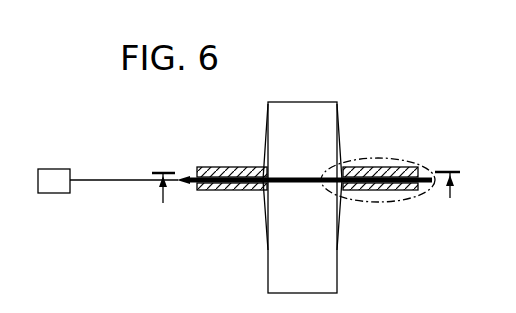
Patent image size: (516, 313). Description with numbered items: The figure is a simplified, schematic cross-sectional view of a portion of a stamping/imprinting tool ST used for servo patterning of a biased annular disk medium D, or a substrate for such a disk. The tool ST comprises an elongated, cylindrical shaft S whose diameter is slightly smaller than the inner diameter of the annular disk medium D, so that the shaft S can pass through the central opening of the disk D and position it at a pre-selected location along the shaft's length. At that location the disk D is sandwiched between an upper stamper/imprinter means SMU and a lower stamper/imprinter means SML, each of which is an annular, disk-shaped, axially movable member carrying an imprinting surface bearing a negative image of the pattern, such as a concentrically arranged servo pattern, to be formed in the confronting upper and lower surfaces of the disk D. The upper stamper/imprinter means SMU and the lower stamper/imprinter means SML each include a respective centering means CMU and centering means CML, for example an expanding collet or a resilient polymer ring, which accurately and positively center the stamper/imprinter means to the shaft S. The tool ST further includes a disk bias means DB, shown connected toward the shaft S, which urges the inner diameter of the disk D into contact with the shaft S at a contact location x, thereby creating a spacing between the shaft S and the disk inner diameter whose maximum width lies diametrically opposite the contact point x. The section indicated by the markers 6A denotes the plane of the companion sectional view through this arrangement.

The stamping/imprinting tool ST is at (271, 88).
The shaft S is at (304, 237).
The contact point x is at (263, 185).
The upper stamper/imprinter means SMU is at (223, 166).
The lower stamper/imprinter means SML is at (220, 190).
The upper centering means CMU is at (342, 146).
The lower centering means CML is at (343, 206).
The disk bias means DB is at (53, 192).
The annular disk medium D is at (418, 190).
The section line 6A- 6A is at (438, 128).